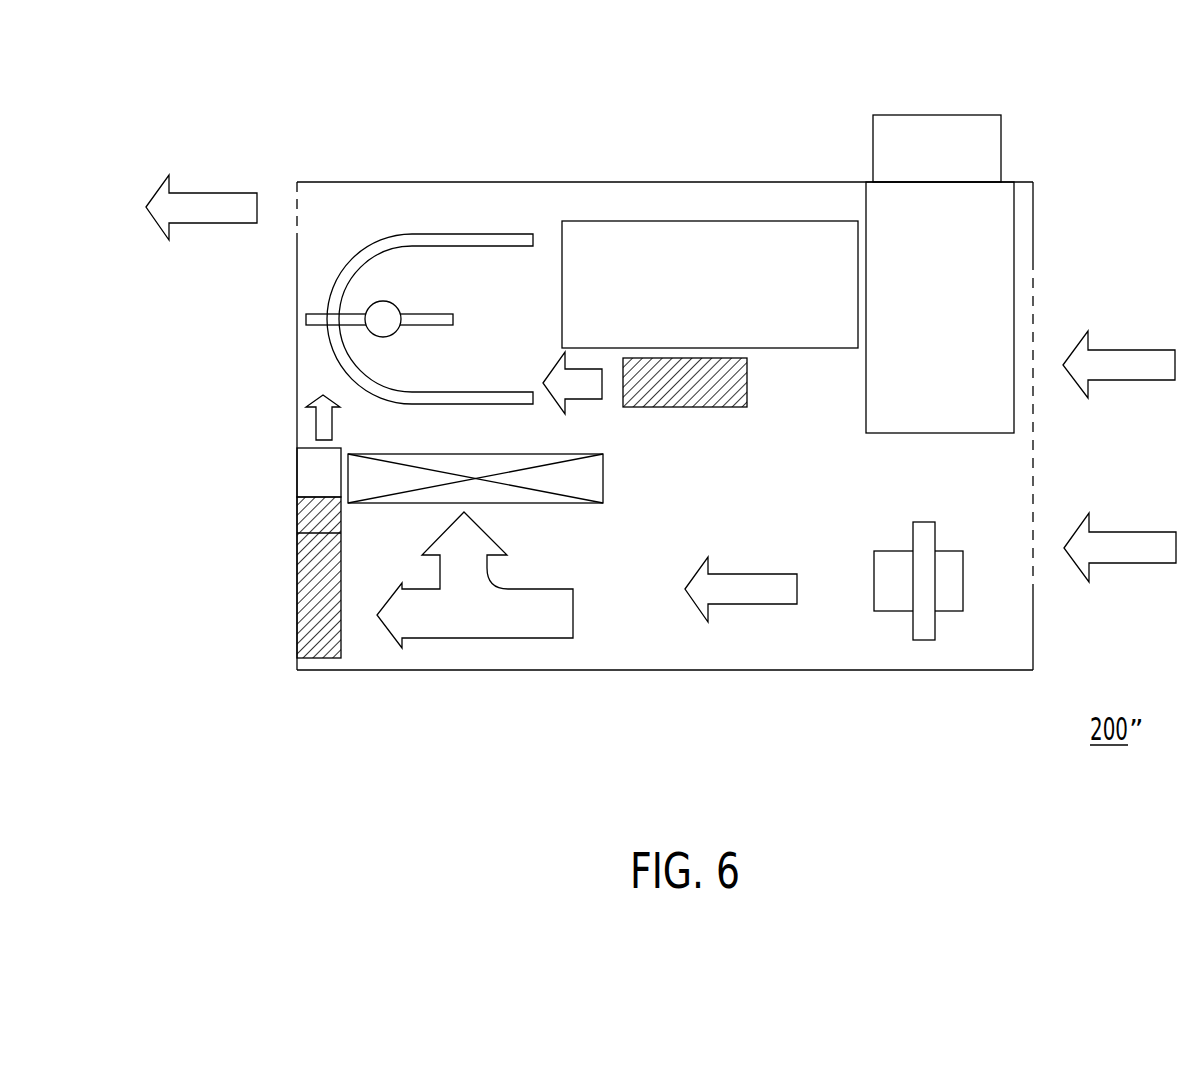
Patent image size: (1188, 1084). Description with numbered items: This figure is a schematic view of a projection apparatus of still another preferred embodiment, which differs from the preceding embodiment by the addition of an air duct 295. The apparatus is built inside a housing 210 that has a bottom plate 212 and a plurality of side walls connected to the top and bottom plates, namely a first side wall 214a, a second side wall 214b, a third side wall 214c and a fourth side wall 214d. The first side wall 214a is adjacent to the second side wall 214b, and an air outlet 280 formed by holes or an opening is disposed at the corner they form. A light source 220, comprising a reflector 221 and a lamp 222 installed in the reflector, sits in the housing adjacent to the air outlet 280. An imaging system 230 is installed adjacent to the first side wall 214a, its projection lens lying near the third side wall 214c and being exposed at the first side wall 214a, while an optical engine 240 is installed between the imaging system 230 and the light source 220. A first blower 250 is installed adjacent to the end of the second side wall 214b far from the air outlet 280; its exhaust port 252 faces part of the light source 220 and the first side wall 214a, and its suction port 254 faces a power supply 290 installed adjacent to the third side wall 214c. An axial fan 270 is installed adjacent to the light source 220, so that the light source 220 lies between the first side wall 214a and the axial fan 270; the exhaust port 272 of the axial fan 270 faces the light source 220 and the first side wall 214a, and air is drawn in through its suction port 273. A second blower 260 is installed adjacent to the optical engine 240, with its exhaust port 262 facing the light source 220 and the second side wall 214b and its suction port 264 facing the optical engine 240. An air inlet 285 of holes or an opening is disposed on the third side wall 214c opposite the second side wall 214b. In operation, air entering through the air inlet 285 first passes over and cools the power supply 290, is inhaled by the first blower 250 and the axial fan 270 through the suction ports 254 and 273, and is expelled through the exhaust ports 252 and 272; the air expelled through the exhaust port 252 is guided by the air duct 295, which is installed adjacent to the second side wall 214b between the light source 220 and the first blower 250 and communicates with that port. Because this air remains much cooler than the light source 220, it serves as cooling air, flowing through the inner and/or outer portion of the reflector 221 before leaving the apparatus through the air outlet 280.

The housing 210 is at (664, 419).
The bottom plate 212 is at (733, 635).
The first side wall 214a is at (345, 183).
The second side wall 214b is at (296, 325).
The third side wall 214c is at (1032, 232).
The fourth side wall 214d is at (488, 671).
The light source 220 is at (430, 203).
The reflector 221 is at (408, 240).
The lamp 222 is at (387, 317).
The imaging system 230 is at (1002, 238).
The optical engine 240 is at (595, 232).
The first blower 250 is at (299, 614).
The exhaust port 252 is at (317, 503).
The suction port 254 is at (341, 623).
The second blower 260 is at (651, 261).
The exhaust port 262 is at (628, 388).
The suction port 264 is at (717, 353).
The axial fan 270 is at (427, 550).
The exhaust port 272 is at (373, 450).
The suction port 273 is at (377, 505).
The air outlet 280 is at (296, 222).
The air inlet 285 is at (1033, 330).
The power supply 290 is at (895, 602).
The air duct 295 is at (313, 466).